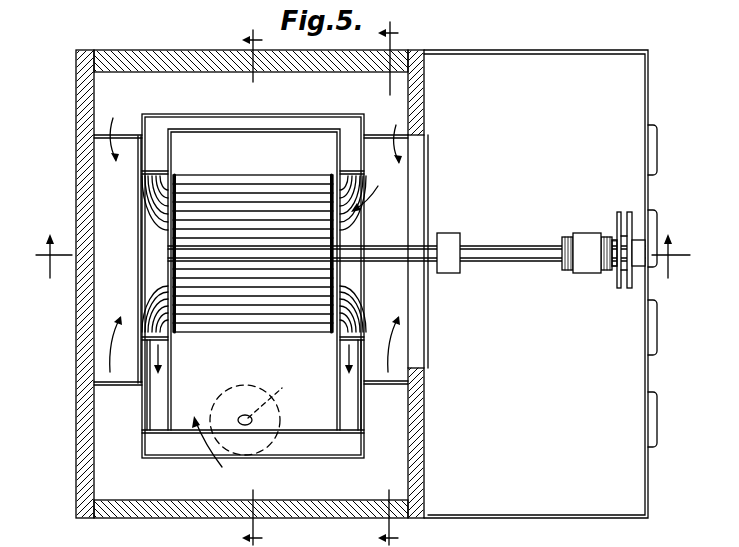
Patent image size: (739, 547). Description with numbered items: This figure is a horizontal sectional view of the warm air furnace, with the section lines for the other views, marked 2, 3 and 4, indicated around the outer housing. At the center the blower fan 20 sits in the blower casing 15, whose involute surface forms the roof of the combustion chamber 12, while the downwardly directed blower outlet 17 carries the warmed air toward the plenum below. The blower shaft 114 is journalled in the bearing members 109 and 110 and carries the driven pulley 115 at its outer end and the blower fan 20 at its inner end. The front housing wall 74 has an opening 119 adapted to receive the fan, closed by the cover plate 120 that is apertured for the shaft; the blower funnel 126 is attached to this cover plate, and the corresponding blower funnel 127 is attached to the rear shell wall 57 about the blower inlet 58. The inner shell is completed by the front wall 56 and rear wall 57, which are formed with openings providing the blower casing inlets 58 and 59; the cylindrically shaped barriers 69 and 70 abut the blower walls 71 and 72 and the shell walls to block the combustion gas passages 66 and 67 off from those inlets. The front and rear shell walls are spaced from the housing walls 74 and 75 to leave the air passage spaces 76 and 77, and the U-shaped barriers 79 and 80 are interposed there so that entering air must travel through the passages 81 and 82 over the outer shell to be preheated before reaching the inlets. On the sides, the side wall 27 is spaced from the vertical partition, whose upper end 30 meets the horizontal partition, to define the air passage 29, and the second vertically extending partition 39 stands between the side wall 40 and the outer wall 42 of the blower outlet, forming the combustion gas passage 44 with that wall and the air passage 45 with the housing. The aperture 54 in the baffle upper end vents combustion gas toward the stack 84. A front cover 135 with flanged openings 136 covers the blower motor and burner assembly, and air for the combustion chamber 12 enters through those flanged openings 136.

The combustion chamber 12 is at (307, 127).
The blower casing 15 is at (215, 142).
The blower casing outlet 17 is at (253, 450).
The blower fan 20 is at (256, 330).
The side wall 27 is at (178, 53).
The air passage 29 is at (213, 84).
The upper end of partition 30 is at (176, 114).
The second vertically extending partition 39 is at (188, 457).
The side wall 40 is at (326, 515).
The outer wall of blower outlet 42 is at (313, 427).
The combustion gas passage 44 is at (281, 448).
The air passage 45 is at (178, 492).
The aperture 54 is at (275, 395).
The front wall 56 is at (360, 426).
The rear wall 57 is at (142, 412).
The blower casing inlet 58 is at (146, 240).
The blower casing inlet 59 is at (357, 242).
The combustion gas passage 66 is at (341, 395).
The combustion gas passage 67 is at (163, 396).
The cylindrically shaped barrier 69 is at (162, 170).
The cylindrically shaped barrier 70 is at (345, 170).
The blower wall 71 is at (170, 356).
The blower wall 72 is at (338, 351).
The front housing wall 74 is at (430, 212).
The rear housing wall 75 is at (92, 300).
The air passage space 76 is at (105, 113).
The air passage space 77 is at (400, 112).
The U-shaped barrier 79 is at (93, 386).
The U-shaped barrier 80 is at (408, 392).
The air passage 81 is at (110, 318).
The air passage 82 is at (400, 332).
The combustion gas outlet 84 is at (240, 388).
The bearing member 109 is at (448, 273).
The bearing member 110 is at (590, 270).
The blower shaft 114 is at (506, 246).
The driven pulley 115 is at (624, 290).
The opening 119 is at (429, 153).
The cover plate 120 is at (430, 190).
The blower funnel 126 is at (374, 190).
The blower funnel 127 is at (98, 175).
The front cover 135 is at (650, 480).
The flanged openings 136 is at (657, 210).
The section line 2 is at (252, 280).
The section line 3 is at (388, 275).
The section line 4 is at (361, 256).